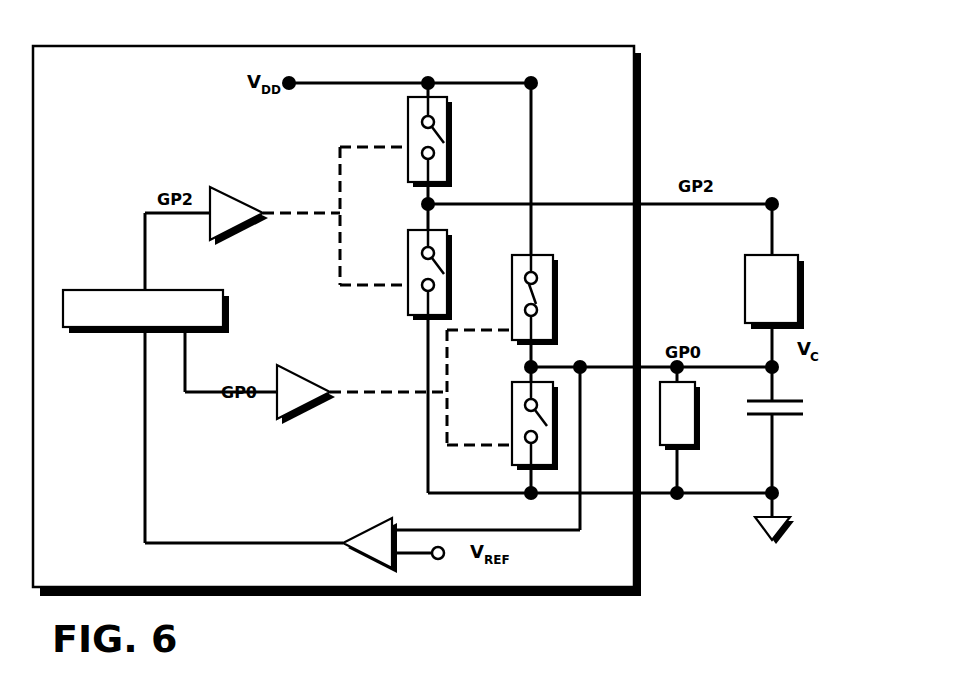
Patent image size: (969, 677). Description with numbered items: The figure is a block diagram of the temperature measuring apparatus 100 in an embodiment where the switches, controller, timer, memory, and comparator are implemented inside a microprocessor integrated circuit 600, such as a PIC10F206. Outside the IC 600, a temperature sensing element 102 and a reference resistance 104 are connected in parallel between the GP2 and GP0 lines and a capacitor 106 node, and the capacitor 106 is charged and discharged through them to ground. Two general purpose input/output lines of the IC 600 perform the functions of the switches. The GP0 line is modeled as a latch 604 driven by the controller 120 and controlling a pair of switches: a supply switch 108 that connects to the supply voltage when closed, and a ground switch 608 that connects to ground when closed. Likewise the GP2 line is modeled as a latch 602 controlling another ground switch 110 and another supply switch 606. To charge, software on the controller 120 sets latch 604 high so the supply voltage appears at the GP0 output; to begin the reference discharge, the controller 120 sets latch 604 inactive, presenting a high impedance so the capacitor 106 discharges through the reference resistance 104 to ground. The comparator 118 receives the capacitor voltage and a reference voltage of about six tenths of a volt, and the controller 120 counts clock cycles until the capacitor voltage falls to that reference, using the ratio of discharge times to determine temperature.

The apparatus 100 is at (792, 124).
The temperature sensing element 102 is at (806, 283).
The reference resistance 104 is at (700, 395).
The capacitor 106 is at (788, 400).
The supply switch 108 is at (558, 270).
The ground switch 110 is at (410, 232).
The comparator 118 is at (352, 532).
The controller 120 is at (101, 292).
The integrated circuit 600 is at (639, 120).
The latch 602 is at (218, 192).
The latch 604 is at (301, 375).
The supply switch 606 is at (408, 121).
The ground switch 608 is at (513, 400).